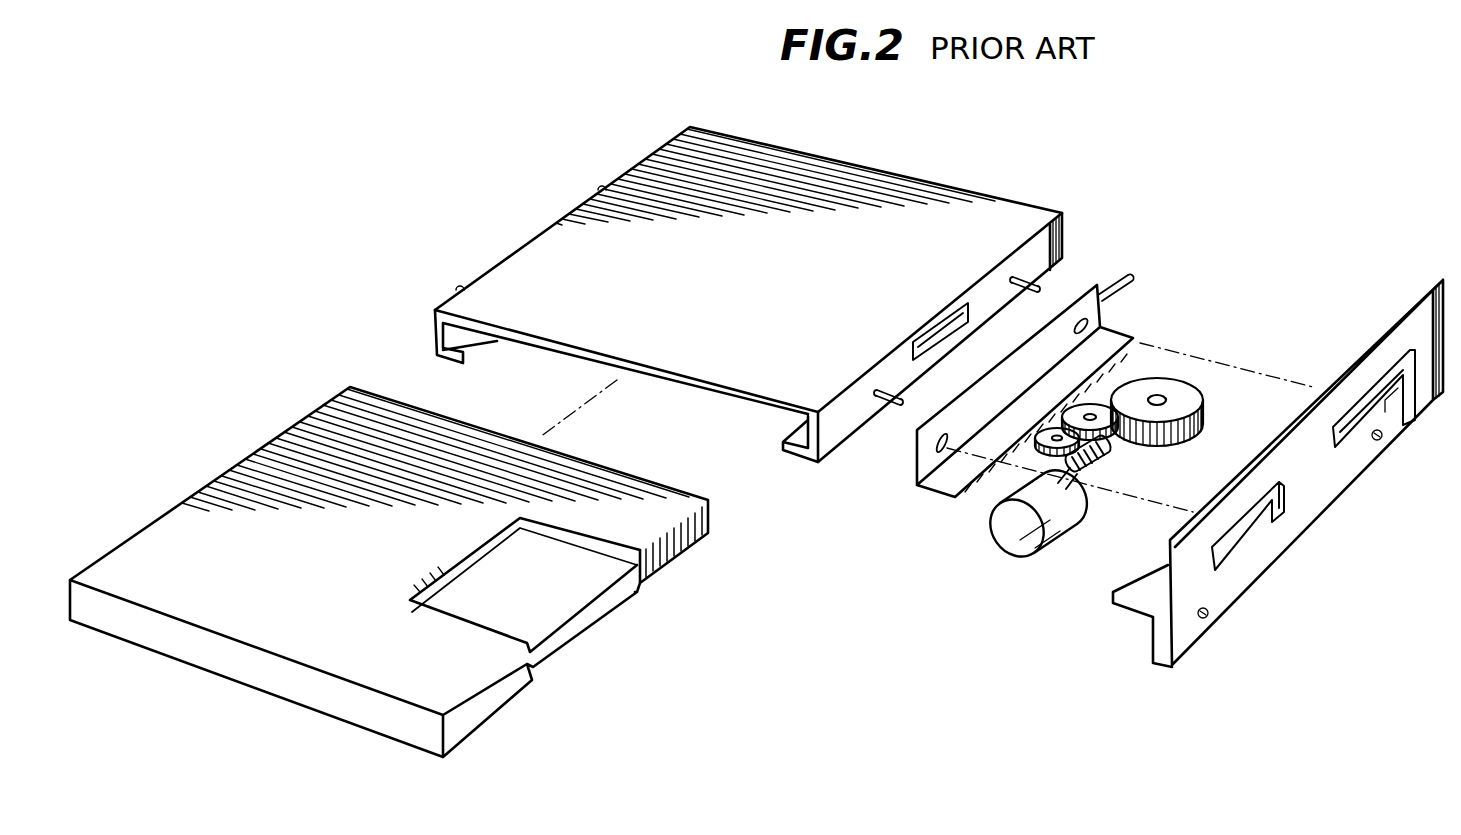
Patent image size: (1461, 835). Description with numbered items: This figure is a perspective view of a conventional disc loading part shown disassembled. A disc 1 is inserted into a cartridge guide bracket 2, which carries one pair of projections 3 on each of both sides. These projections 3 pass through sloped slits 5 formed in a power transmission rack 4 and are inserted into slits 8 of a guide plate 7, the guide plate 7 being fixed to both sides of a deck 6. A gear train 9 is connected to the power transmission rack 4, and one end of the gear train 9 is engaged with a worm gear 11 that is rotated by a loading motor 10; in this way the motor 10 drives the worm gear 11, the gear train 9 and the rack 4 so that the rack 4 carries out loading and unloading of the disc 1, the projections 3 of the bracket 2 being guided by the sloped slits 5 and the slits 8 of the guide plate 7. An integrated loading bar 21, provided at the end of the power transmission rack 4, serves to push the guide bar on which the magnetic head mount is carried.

The disc 1 is at (277, 455).
The cartridge guide bracket 2 is at (563, 235).
The projections 3 is at (1073, 240).
The power transmission rack 4 is at (913, 477).
The sloped slits 5 is at (1103, 323).
The deck 6 is at (1133, 600).
The guide plate 7 is at (1253, 570).
The slits 8 is at (1287, 510).
The gear train 9 is at (1090, 412).
The loading motor 10 is at (1013, 530).
The worm gear 11 is at (1097, 475).
The loading bar 21 is at (1119, 277).